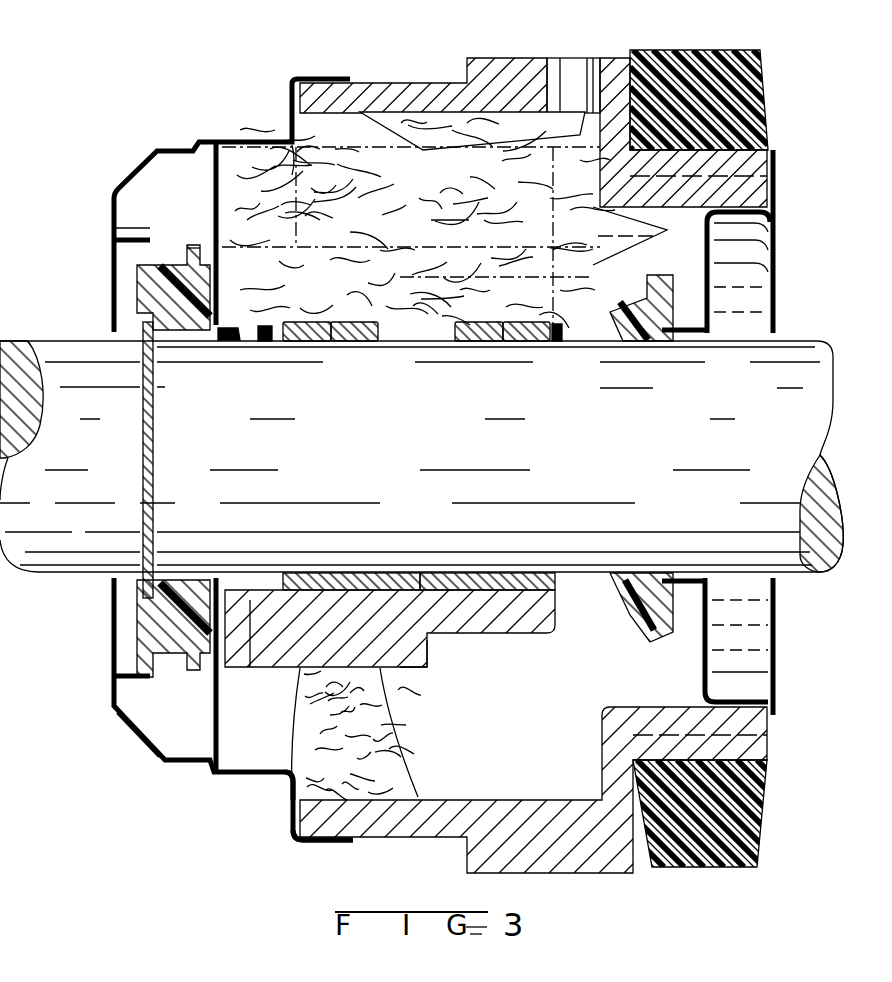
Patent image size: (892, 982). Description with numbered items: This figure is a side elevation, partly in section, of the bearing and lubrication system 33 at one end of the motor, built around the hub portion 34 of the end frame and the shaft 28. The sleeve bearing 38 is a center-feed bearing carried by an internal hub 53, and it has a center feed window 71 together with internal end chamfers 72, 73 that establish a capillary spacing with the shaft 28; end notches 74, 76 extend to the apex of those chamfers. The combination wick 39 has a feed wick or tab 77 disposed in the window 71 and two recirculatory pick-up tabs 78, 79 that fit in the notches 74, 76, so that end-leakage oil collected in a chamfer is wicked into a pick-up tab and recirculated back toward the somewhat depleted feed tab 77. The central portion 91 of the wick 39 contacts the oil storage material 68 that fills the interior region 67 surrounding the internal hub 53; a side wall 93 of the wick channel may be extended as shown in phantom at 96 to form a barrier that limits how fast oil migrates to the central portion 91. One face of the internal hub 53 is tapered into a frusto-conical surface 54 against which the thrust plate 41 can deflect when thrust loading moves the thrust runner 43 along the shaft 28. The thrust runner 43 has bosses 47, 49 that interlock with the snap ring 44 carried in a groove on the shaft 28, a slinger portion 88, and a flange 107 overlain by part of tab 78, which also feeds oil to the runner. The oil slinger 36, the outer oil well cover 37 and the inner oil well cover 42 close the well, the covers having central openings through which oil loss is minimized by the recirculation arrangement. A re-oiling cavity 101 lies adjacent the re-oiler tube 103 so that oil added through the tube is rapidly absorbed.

The shaft 28 is at (625, 459).
The bearing and lubrication system 33 is at (290, 780).
The hub portion 34 is at (453, 840).
The oil slinger 36 is at (660, 636).
The outer oil well cover 37 is at (752, 637).
The sleeve bearing 38 is at (563, 590).
The combination wick 39 is at (590, 315).
The thrust plate 41 is at (214, 187).
The inner oil well cover 42 is at (125, 727).
The thrust runner 43 is at (173, 653).
The snap ring 44 is at (155, 570).
The boss 47 is at (137, 632).
The boss 49 is at (137, 273).
The internal hub 53 is at (405, 668).
The frusto-conical surface 54 is at (185, 266).
The interior region 67 is at (545, 744).
The oil storage material 68 is at (395, 742).
The center feed window 71 is at (377, 342).
The internal end chamfer 72 is at (280, 572).
The internal end chamfer 73 is at (553, 585).
The end notch 74 is at (282, 345).
The end notch 76 is at (550, 345).
The feed wick tab 77 is at (414, 345).
The recirculatory pick-up tab 78 is at (258, 342).
The recirculatory pick-up tab 79 is at (557, 342).
The slinger portion 88 is at (194, 674).
The central portion of wick 91 is at (420, 227).
The side wall 93 is at (598, 283).
The extended wall barrier 96 is at (583, 112).
The re-oiling cavity 101 is at (578, 130).
The re-oiler tube 103 is at (582, 75).
The flange 107 is at (233, 342).